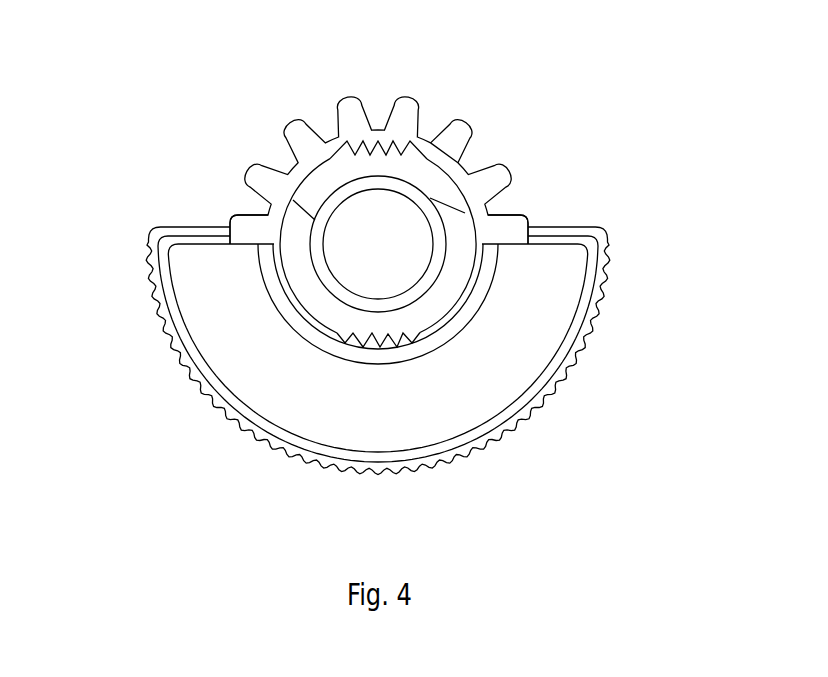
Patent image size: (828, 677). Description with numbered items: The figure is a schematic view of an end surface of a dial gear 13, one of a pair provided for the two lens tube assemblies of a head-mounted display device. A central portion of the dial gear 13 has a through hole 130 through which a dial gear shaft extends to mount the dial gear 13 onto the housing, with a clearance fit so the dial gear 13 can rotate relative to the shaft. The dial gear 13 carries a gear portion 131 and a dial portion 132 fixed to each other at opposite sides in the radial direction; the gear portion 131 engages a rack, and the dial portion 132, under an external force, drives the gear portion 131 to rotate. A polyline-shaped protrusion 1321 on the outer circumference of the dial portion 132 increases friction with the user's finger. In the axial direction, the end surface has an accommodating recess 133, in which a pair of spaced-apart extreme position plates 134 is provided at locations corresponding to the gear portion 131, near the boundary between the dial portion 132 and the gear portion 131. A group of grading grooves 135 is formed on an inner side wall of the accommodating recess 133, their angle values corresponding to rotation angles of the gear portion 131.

The dial gear 13 is at (375, 285).
The through hole 130 is at (385, 228).
The gear portion 131 is at (438, 153).
The dial portion 132 is at (355, 377).
The polyline-shaped protrusion 1321 is at (213, 408).
The accommodating recess 133 is at (453, 265).
The extreme position plates 134 is at (308, 212).
The grading grooves 135 is at (365, 345).